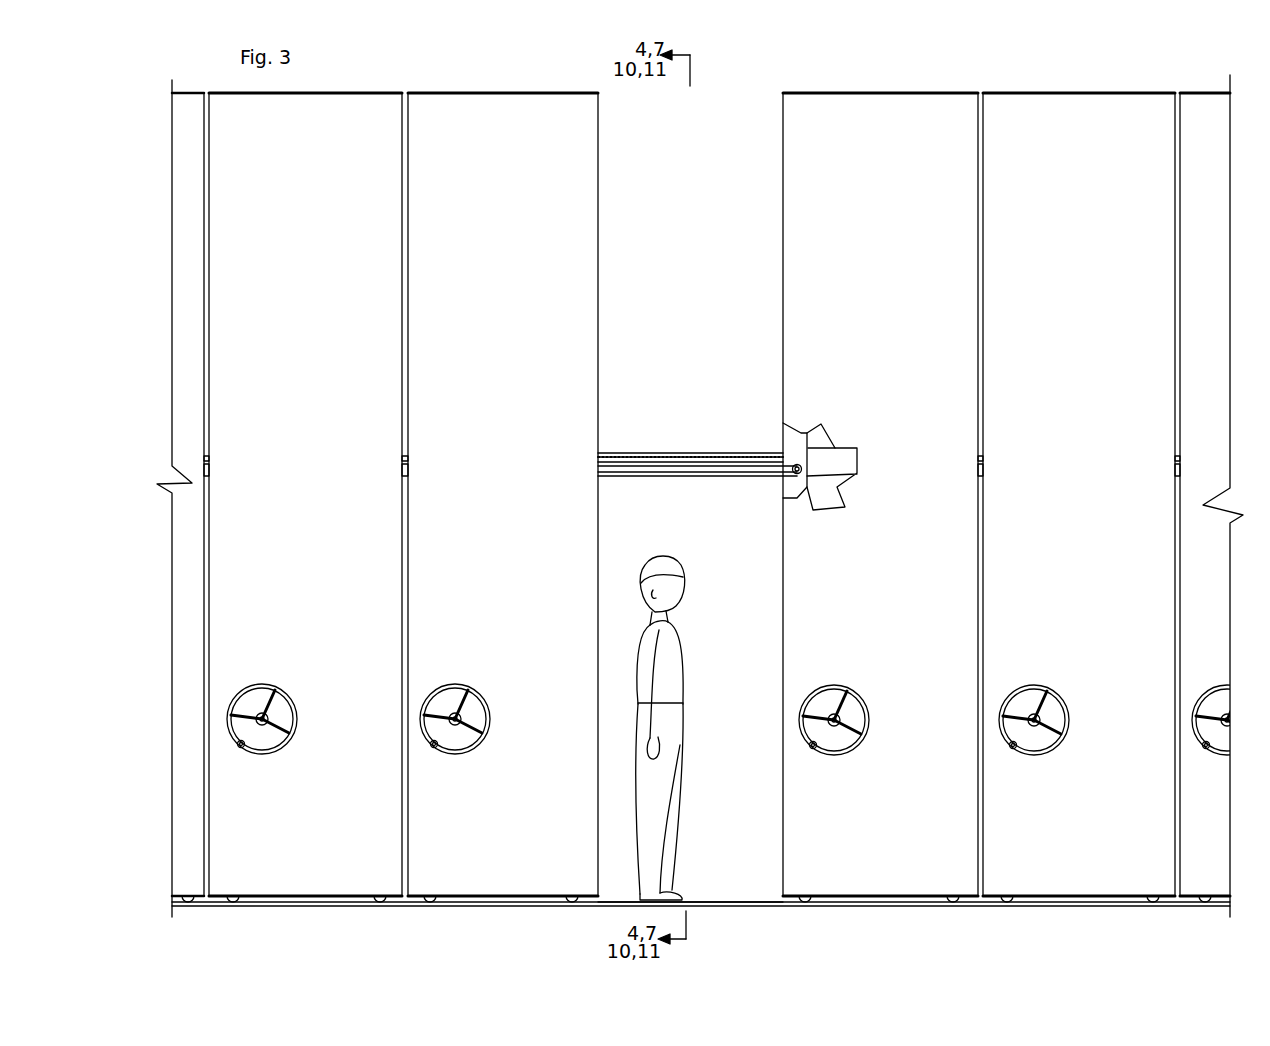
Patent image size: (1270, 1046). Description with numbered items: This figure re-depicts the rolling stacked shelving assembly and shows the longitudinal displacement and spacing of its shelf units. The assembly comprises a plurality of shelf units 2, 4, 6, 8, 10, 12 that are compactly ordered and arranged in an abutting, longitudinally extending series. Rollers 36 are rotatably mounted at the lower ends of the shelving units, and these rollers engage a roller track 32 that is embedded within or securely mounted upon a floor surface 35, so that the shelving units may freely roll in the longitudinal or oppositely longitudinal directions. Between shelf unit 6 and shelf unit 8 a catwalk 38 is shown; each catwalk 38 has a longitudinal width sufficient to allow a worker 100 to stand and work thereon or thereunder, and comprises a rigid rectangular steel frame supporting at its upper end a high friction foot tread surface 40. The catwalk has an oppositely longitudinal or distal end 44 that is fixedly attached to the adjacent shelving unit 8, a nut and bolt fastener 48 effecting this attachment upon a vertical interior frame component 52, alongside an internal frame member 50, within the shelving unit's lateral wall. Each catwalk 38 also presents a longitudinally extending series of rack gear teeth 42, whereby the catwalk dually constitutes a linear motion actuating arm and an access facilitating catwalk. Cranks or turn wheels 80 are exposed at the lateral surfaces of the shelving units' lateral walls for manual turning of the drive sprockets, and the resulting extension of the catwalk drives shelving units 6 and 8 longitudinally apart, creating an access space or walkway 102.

The shelf unit 2 is at (191, 241).
The shelf unit 4 is at (327, 137).
The shelf unit 6 is at (475, 147).
The shelf unit 8 is at (860, 136).
The shelf unit 10 is at (1068, 136).
The shelf unit 12 is at (1204, 327).
The roller track 32 is at (752, 901).
The floor surface 35 is at (548, 945).
The roller 36 is at (379, 903).
The catwalk 38 is at (656, 476).
The foot tread surface 40 is at (641, 452).
The rack gear teeth 42 is at (698, 478).
The distal end 44 is at (805, 493).
The nut and bolt fastener 48 is at (798, 437).
The internal frame member 50 is at (830, 480).
The vertical interior frame component 52 is at (810, 449).
The turn wheel 80 is at (264, 684).
The worker 100 is at (663, 636).
The access space 102 is at (705, 858).